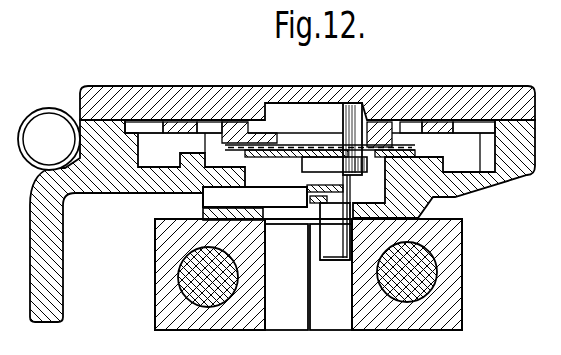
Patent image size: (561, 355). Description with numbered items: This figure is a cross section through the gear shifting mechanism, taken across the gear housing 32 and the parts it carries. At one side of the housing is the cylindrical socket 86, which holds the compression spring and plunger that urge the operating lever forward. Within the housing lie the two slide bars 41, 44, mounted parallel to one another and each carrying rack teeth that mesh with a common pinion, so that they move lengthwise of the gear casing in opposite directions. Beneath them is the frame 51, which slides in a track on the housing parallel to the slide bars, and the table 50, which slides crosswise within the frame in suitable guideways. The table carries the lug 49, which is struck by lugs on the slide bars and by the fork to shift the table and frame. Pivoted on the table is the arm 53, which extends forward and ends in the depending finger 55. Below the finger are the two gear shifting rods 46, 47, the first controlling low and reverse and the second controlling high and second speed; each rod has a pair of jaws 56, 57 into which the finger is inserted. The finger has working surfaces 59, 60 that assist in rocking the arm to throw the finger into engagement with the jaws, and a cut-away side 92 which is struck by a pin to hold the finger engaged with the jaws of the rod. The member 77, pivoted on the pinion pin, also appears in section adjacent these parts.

The gear housing 32 is at (105, 180).
The slide bar 41 is at (188, 118).
The slide bar 44 is at (424, 128).
The gear shifting rod 46 is at (417, 266).
The gear shifting rod 47 is at (180, 282).
The lug 49 is at (352, 112).
The table 50 is at (277, 142).
The frame 51 is at (218, 188).
The arm 53 is at (303, 163).
The finger 55 is at (335, 262).
The jaws 56 is at (331, 277).
The jaws 57 is at (286, 277).
The working surface 59 is at (330, 242).
The working surface 60 is at (340, 250).
The member 77 is at (312, 191).
The cylindrical socket 86 is at (52, 100).
The cut-away side 92 is at (330, 195).